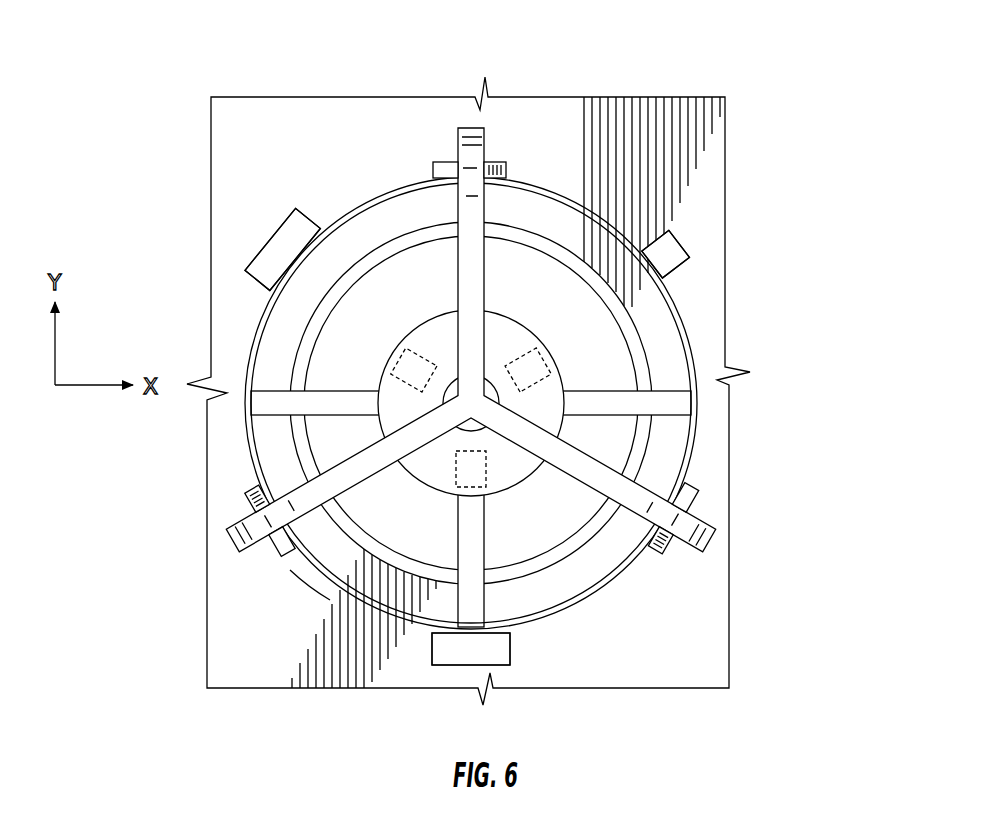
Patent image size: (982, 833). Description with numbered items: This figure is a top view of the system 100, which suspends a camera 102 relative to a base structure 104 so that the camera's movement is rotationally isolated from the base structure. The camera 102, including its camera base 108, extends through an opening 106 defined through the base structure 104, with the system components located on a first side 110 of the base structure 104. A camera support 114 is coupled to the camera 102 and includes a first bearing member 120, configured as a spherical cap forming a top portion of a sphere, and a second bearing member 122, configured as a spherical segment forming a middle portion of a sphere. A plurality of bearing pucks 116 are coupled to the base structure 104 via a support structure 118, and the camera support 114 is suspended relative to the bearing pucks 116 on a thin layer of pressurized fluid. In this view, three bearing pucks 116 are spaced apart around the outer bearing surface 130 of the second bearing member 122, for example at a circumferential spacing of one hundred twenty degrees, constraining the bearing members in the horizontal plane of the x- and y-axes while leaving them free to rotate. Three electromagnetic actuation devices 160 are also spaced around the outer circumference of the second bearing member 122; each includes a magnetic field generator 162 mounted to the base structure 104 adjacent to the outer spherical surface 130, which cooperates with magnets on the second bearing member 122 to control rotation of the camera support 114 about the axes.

The system 100 is at (248, 70).
The camera 102 is at (602, 360).
The base structure 104 is at (718, 130).
The opening 106 is at (302, 358).
The camera base 108 is at (412, 282).
The first side 110 is at (705, 172).
The camera support 114 is at (535, 508).
The bearing pucks 116 is at (440, 165).
The support structure 118 is at (479, 128).
The first bearing member 120 is at (429, 495).
The second bearing member 122 is at (556, 617).
The outer bearing surface 130 is at (312, 575).
The electromagnetic actuation devices 160 is at (252, 224).
The magnetic field generator 162 is at (246, 268).